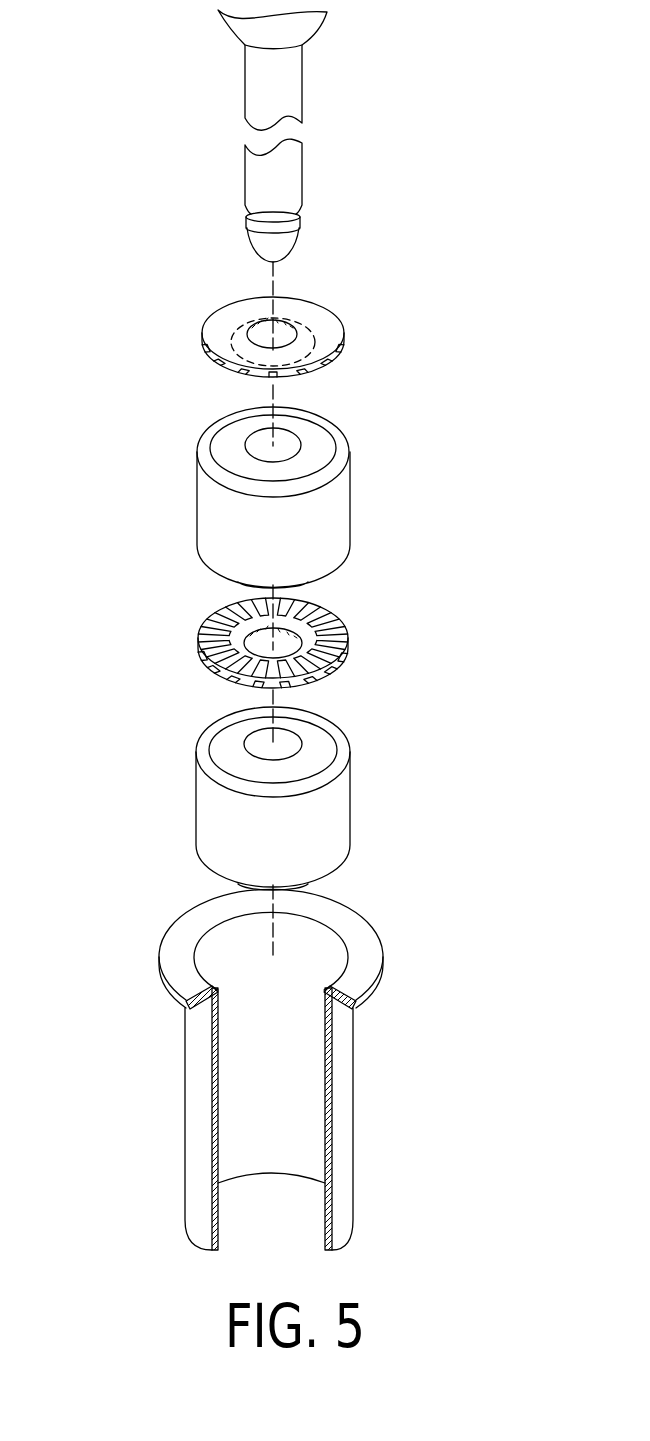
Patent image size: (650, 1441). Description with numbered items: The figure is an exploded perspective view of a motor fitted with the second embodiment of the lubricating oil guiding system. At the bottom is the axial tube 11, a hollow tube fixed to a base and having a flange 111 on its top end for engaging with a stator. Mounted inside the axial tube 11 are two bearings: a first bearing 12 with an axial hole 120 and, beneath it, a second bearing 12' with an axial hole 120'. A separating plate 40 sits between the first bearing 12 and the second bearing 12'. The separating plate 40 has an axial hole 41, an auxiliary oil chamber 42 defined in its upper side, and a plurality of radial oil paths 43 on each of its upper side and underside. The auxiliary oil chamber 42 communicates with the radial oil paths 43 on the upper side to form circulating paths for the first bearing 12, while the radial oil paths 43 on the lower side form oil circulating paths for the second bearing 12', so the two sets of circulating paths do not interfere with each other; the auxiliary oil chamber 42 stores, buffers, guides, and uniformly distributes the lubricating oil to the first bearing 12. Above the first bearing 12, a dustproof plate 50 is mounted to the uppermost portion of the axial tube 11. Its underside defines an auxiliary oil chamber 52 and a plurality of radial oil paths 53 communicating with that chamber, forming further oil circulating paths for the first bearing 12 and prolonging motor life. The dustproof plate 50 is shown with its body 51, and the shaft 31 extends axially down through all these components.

The shaft 31 is at (250, 183).
The dustproof plate 50 is at (291, 309).
The washer body 51 is at (303, 345).
The auxiliary oil chamber 52 is at (300, 330).
The radial oil paths 53 is at (313, 377).
The first bearing 12 is at (224, 490).
The axial hole 120 is at (199, 427).
The separating plate 40 is at (277, 630).
The axial hole 41 is at (213, 645).
The auxiliary oil chamber 42 is at (230, 612).
The radial oil paths 43 is at (212, 633).
The second bearing 12' is at (278, 797).
The axial hole 120' is at (356, 732).
The axial tube 11 is at (323, 1048).
The flange 111 is at (366, 943).